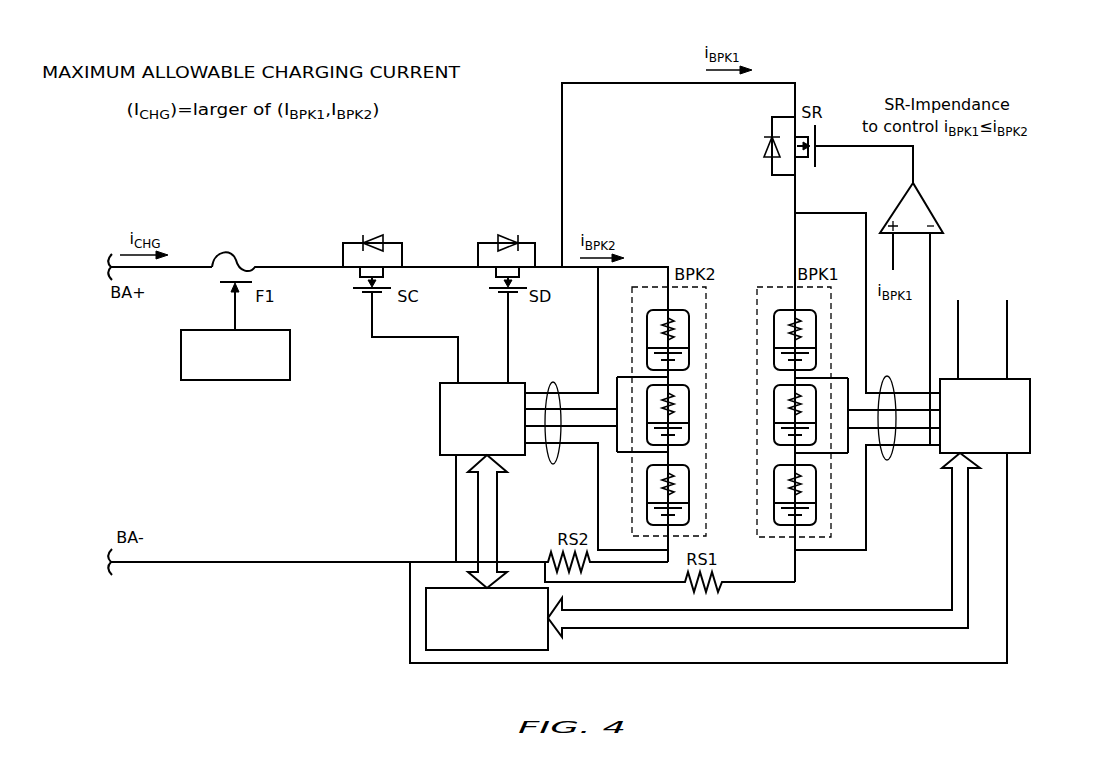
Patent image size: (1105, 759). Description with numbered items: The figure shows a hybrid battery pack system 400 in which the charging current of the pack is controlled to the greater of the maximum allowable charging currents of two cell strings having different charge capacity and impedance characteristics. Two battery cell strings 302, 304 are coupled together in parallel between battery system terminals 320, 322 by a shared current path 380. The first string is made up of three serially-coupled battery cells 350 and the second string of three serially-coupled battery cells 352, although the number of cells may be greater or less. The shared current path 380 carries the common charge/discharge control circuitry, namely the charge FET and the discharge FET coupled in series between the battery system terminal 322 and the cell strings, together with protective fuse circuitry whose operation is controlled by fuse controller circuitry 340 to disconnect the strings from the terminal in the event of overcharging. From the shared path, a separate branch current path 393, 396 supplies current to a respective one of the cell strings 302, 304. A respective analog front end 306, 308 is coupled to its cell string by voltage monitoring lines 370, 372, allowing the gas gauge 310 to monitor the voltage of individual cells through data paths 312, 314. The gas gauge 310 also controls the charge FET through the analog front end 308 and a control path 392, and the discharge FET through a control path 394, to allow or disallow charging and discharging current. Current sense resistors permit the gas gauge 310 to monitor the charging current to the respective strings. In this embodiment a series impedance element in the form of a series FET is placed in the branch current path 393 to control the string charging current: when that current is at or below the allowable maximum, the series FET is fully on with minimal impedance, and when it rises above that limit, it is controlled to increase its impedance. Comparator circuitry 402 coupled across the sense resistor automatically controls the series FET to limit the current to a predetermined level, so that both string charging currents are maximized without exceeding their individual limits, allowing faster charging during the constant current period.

The battery cell string 302 is at (787, 285).
The battery cell string 304 is at (757, 287).
The analog front end 306 is at (975, 378).
The analog front end 308 is at (440, 430).
The gas gauge 310 is at (548, 640).
The data path 312 is at (828, 608).
The data path 314 is at (498, 516).
The battery system terminal 320 is at (102, 570).
The battery system terminal 322 is at (102, 277).
The fuse controller circuitry 340 is at (246, 381).
The battery cell 350 is at (773, 330).
The battery cell 352 is at (647, 332).
The voltage monitoring lines 370 is at (887, 378).
The voltage monitoring lines 372 is at (553, 382).
The shared current path 380 is at (190, 266).
The control path 392 is at (372, 340).
The branch current path 393 is at (777, 83).
The control path 394 is at (506, 320).
The branch current path 396 is at (654, 266).
The hybrid battery pack system 400 is at (1032, 50).
The comparator circuitry 402 is at (935, 205).